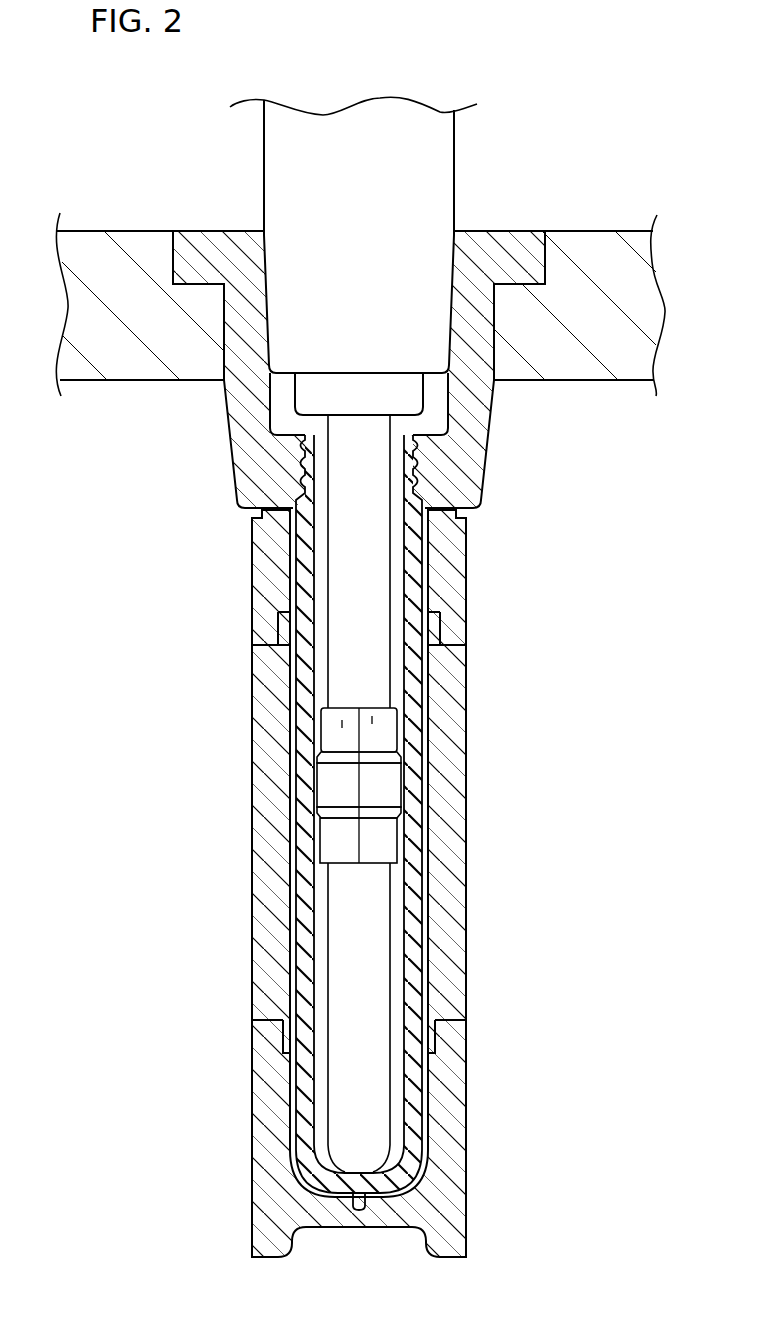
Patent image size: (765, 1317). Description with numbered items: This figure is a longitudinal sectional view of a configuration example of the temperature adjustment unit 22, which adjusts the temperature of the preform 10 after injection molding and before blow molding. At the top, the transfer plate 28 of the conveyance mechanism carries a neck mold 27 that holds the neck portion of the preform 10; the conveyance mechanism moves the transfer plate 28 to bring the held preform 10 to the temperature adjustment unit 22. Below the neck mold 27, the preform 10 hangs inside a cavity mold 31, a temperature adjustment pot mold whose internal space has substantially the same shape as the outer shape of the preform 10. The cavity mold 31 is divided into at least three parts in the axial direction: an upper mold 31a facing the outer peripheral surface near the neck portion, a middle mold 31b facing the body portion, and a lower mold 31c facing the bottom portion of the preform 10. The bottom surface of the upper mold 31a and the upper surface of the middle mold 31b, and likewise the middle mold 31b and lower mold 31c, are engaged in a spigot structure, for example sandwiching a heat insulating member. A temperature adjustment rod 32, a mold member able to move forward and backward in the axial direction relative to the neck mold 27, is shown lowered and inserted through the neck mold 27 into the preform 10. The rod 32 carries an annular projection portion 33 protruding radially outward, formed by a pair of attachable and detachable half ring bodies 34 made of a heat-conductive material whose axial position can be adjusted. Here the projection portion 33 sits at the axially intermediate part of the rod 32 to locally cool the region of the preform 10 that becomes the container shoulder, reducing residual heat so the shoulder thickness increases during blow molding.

The temperature adjustment unit 22 is at (638, 199).
The transfer plate 28 is at (585, 240).
The neck mold 27 is at (486, 451).
The cavity mold 31 is at (599, 566).
The upper mold 31a is at (467, 585).
The middle mold 31b is at (467, 822).
The lower mold 31c is at (467, 1088).
The preform 10 is at (299, 972).
The temperature adjustment rod 32 is at (328, 1088).
The projection portion 33 is at (340, 789).
The half ring body 34 is at (372, 716).